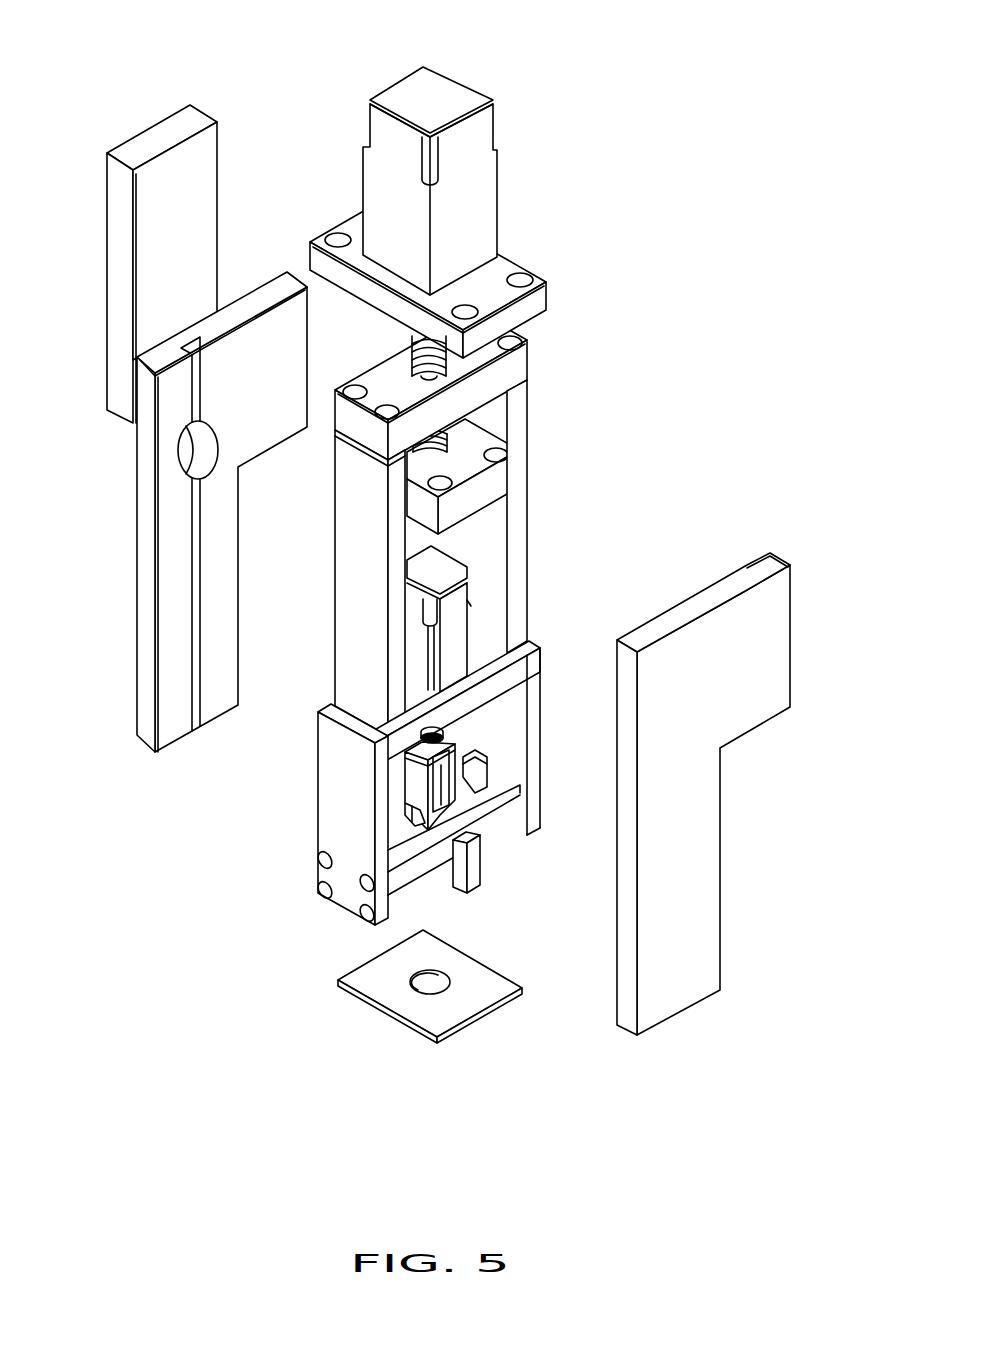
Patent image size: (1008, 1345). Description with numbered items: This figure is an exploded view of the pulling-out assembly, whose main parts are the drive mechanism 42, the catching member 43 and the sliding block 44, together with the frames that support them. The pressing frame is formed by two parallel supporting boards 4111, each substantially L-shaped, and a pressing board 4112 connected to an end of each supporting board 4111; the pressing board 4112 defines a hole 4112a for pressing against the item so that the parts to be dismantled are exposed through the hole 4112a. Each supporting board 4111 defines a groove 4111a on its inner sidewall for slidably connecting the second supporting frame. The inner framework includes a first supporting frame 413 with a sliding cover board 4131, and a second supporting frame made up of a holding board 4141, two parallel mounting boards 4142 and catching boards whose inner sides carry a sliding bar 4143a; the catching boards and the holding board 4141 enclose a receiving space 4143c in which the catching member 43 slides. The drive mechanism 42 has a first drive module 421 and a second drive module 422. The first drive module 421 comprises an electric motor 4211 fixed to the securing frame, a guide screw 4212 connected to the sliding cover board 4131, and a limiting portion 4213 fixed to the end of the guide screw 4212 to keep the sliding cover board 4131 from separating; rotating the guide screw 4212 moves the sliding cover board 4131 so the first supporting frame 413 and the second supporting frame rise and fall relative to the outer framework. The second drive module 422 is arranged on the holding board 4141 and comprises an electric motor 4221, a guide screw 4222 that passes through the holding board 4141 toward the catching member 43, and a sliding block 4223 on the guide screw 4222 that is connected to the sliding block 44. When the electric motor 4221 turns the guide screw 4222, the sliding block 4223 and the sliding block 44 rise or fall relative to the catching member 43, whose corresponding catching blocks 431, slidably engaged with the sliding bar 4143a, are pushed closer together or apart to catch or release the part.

The drive mechanism 42 is at (481, 195).
The first drive module 421 is at (481, 223).
The electric motor 4211 is at (475, 135).
The guide screw 4212 is at (497, 284).
The first supporting frame 413 is at (488, 523).
The sliding cover board 4131 is at (513, 365).
The limiting portion 4213 is at (467, 453).
The second drive module 422 is at (513, 605).
The electric motor 4221 is at (438, 567).
The guide screw 4222 is at (431, 733).
The sliding block 4223 is at (433, 757).
The supporting board 4111 is at (465, 570).
The groove 4111a is at (186, 612).
The holding board 4141 is at (333, 735).
The mounting board 4142 is at (335, 778).
The receiving space 4143c is at (510, 781).
The sliding bar 4143a is at (467, 870).
The catching member 43 is at (423, 759).
The catching block 431 is at (463, 803).
The sliding block 44 is at (395, 817).
The pressing board 4112 is at (400, 985).
The hole 4112a is at (412, 975).